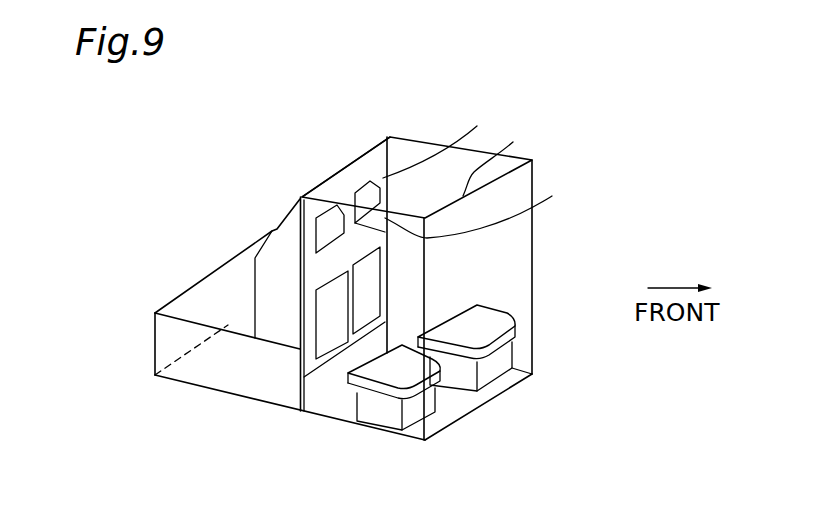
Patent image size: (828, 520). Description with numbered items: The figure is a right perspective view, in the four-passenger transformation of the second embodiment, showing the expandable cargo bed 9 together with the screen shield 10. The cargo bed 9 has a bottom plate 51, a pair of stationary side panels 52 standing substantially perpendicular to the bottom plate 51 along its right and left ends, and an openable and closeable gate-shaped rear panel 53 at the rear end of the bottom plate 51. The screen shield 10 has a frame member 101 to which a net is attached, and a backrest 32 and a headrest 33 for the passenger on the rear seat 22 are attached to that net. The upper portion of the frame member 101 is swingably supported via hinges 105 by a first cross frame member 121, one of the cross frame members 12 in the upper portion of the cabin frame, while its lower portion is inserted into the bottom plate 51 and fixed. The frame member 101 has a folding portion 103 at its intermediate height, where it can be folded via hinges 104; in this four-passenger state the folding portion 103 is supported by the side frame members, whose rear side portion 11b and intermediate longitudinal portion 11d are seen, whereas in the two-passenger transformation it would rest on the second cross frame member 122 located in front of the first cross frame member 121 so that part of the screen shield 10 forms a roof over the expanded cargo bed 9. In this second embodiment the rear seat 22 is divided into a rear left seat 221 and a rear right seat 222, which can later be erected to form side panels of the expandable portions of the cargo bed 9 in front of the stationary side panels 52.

The cargo bed 9 is at (136, 299).
The screen shield 10 is at (329, 156).
The cross frame members 12 is at (378, 132).
The rear seat 22 is at (478, 396).
The backrest 32 is at (328, 332).
The headrest 33 is at (330, 224).
The bottom plate 51 is at (246, 324).
The stationary side panels 52 is at (170, 343).
The rear panel 53 is at (213, 305).
The frame member 101 is at (445, 143).
The folding portion 103 is at (488, 208).
The hinges 104 is at (300, 266).
The hinges 105 is at (300, 196).
The first cross frame member 121 is at (353, 162).
The second cross frame member 122 is at (506, 158).
The rear left seat 221 is at (480, 330).
The rear right seat 222 is at (385, 372).
The rear side portion 11b is at (302, 335).
The intermediate longitudinal portion 11d is at (425, 308).